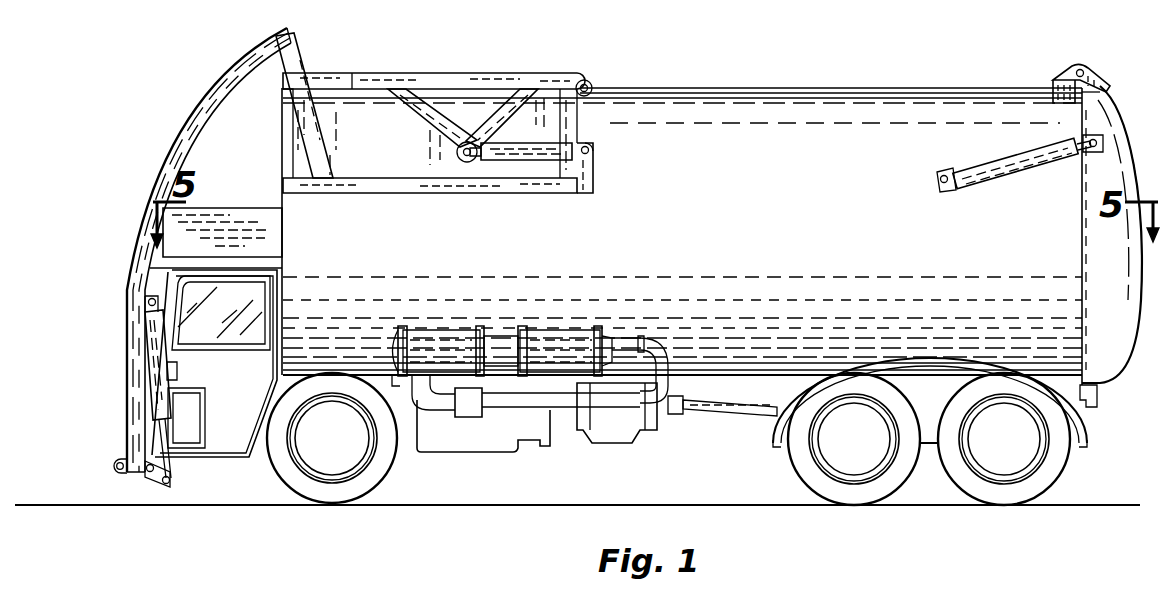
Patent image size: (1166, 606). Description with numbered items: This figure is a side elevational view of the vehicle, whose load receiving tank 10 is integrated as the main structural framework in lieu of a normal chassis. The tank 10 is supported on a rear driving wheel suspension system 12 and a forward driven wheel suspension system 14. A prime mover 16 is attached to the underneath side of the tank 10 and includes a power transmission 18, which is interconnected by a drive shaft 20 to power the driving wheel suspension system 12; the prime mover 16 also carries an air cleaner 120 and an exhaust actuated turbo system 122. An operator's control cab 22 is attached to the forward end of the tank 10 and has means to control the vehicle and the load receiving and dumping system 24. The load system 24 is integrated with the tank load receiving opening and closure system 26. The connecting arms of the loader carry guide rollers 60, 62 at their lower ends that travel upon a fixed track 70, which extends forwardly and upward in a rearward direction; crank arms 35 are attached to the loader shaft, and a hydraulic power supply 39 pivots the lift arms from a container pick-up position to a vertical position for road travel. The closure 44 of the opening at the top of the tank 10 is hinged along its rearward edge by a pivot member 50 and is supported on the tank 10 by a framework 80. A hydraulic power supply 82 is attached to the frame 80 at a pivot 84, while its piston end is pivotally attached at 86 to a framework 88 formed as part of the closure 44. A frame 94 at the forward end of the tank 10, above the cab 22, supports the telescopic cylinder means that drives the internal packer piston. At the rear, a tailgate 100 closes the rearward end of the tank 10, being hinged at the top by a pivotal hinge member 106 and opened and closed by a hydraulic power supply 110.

The load receiving tank 10 is at (805, 214).
The driving wheel suspension system 12 is at (897, 518).
The forward driven wheel suspension system 14 is at (383, 482).
The prime mover 16 is at (483, 442).
The power transmission 18 is at (619, 432).
The drive shaft 20 is at (726, 411).
The operator's control cab 22 is at (216, 319).
The load receiving and dumping system 24 is at (181, 250).
The tank load receiving opening and closure system 26 is at (463, 127).
The crank arms 35 is at (171, 480).
The hydraulic power supply 39 is at (156, 336).
The closure 44 is at (546, 78).
The pivot member 50 is at (591, 84).
The guide roller 60 is at (114, 467).
The guide roller 62 is at (150, 474).
The fixed track 70 is at (196, 108).
The framework 80 is at (447, 190).
The hydraulic power supply 82 is at (530, 148).
The pivot 84 is at (597, 157).
The piston end pivot 86 is at (459, 151).
The framework 88 is at (500, 108).
The frame 94 is at (223, 215).
The tailgate 100 is at (1126, 106).
The pivotal hinge member 106 is at (1080, 68).
The hydraulic power supply 110 is at (1004, 162).
The air cleaner 120 is at (441, 335).
The exhaust actuated turbo system 122 is at (576, 338).